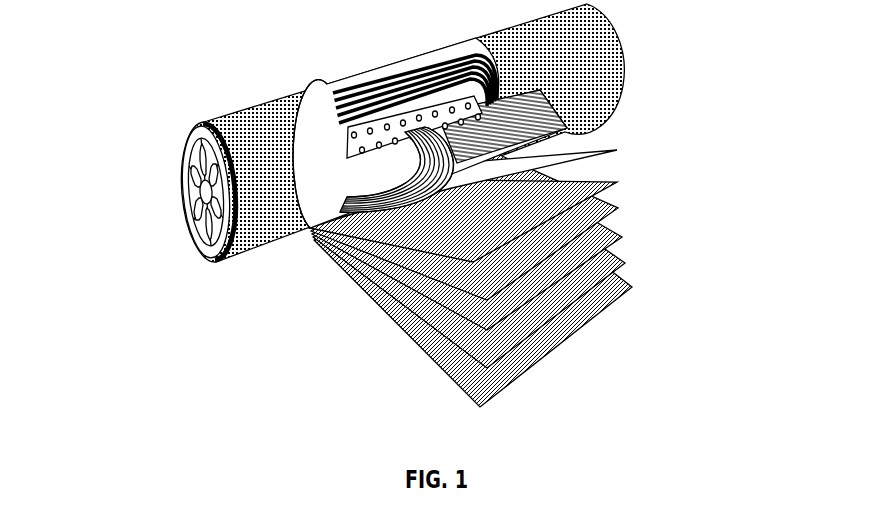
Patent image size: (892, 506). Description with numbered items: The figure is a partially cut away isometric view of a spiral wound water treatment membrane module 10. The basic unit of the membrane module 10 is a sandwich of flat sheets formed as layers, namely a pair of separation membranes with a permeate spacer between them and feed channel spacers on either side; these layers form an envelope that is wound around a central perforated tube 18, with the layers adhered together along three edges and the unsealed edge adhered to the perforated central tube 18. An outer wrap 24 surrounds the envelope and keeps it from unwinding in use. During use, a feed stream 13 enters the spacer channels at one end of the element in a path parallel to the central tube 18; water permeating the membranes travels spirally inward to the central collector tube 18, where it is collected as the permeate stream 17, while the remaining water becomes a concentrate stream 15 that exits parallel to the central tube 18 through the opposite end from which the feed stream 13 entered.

The membrane module 10 is at (405, 205).
The feed stream 13 is at (640, 47).
The concentrate stream 15 is at (195, 244).
The permeate stream 17 is at (205, 196).
The central perforated tube 18 is at (407, 60).
The outer wrap 24 is at (446, 361).